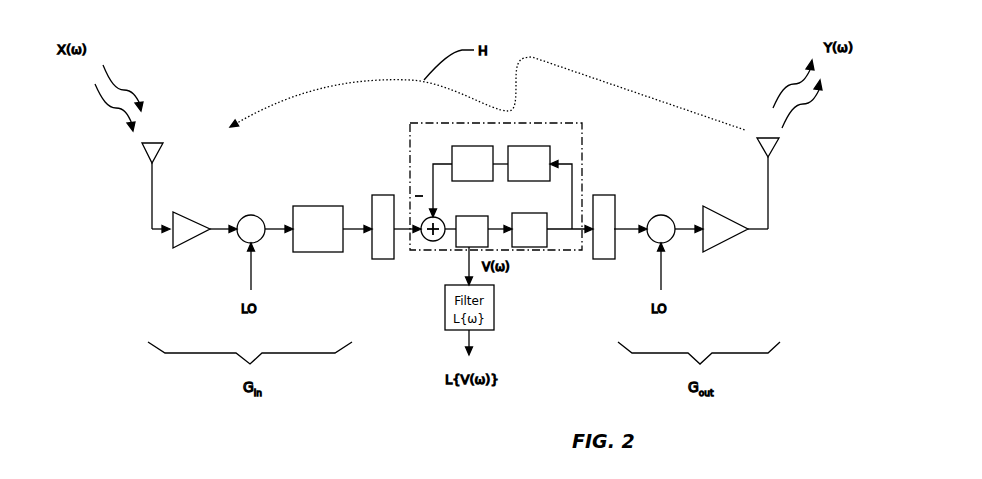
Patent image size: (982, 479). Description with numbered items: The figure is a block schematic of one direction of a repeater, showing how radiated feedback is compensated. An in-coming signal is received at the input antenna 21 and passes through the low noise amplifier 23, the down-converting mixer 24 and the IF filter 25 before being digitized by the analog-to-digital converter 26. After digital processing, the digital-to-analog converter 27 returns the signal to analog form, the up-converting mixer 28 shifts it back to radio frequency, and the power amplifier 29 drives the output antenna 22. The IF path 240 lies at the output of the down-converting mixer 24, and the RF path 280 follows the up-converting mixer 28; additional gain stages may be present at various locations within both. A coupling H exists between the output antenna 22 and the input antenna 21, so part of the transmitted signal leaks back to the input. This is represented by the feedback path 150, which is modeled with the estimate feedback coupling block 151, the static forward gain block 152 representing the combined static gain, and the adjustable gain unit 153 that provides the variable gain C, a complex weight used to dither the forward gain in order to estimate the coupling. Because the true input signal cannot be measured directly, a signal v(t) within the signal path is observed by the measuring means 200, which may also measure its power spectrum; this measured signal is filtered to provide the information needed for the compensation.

The input antenna 21 is at (143, 148).
The output antenna 22 is at (773, 156).
The low noise amplifier 23 is at (190, 220).
The down-converting mixer 24 is at (254, 217).
The IF filter 25 is at (315, 206).
The analog-to-digital converter 26 is at (384, 260).
The digital-to-analog converter 27 is at (603, 260).
The up-converting mixer 28 is at (661, 214).
The power amplifier 29 is at (718, 243).
The feedback path 150 is at (409, 152).
The estimate feedback coupling block 151 is at (476, 146).
The static forward gain block 152 is at (530, 146).
The adjustable gain unit 153 is at (525, 249).
The measuring means 200 is at (467, 249).
The IF path 240 is at (278, 260).
The RF path 280 is at (685, 260).